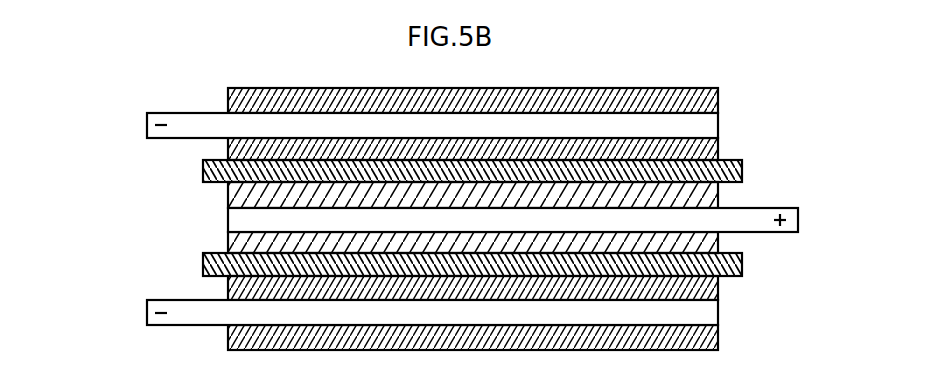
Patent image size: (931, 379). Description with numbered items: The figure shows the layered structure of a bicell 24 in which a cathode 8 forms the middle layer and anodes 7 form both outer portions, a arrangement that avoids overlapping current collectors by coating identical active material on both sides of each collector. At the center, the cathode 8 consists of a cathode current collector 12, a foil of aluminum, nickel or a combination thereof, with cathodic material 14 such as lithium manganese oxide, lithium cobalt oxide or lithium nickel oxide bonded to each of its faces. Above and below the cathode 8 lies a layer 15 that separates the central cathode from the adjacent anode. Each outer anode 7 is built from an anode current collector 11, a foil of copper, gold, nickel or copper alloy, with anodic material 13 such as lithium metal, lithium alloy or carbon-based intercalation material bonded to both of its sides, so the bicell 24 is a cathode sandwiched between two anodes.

The bicell 24 is at (133, 91).
The anode 7 is at (795, 92).
The cathode 8 is at (866, 174).
The anode current collector 11 is at (706, 128).
The cathode current collector 12 is at (798, 222).
The anodic material 13 is at (720, 97).
The cathodic material 14 is at (700, 193).
The separator 15 is at (205, 171).